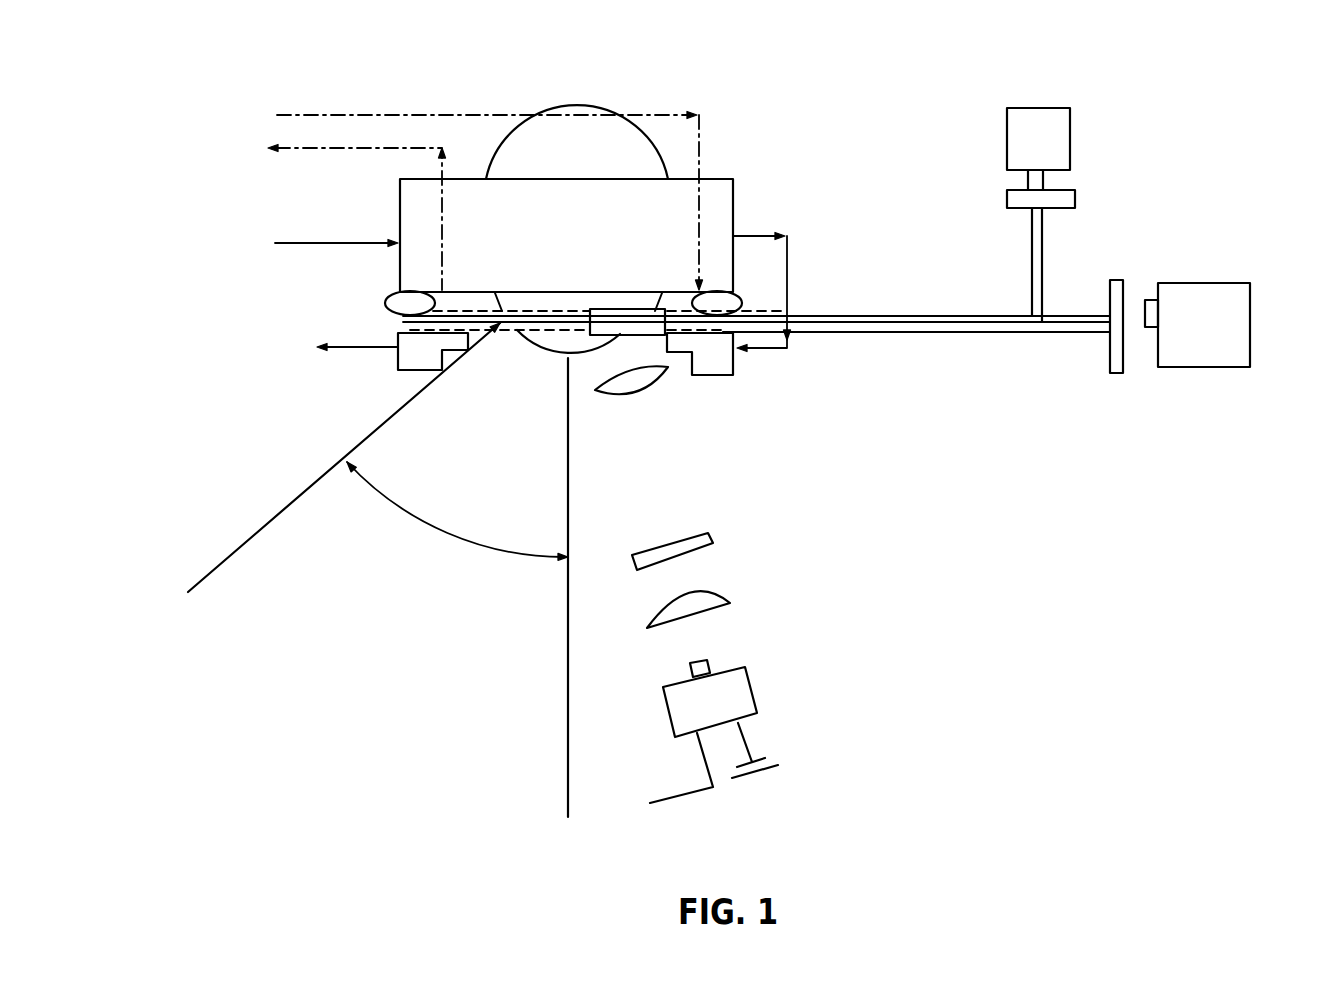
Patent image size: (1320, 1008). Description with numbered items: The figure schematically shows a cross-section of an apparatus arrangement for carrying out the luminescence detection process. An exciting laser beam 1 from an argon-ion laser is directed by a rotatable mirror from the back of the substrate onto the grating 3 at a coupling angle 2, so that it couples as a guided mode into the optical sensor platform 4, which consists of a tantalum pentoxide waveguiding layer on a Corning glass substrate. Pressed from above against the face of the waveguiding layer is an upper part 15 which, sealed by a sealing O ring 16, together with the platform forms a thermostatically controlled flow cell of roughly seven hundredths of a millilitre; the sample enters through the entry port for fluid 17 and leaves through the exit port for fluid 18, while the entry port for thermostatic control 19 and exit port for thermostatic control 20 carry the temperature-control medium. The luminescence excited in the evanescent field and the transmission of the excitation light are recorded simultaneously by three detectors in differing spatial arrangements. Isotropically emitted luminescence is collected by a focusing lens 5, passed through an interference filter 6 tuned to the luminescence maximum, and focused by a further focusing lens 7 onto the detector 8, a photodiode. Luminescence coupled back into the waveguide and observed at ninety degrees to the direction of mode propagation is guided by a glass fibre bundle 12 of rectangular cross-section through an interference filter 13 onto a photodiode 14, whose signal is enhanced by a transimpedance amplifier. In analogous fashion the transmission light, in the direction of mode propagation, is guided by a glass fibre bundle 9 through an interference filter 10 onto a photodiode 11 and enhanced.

The exciting laser beam 1 is at (298, 500).
The coupling angle 2 is at (445, 537).
The grating 3 is at (530, 338).
The optical sensor platform 4 is at (401, 318).
The focusing lens 5 is at (640, 384).
The interference filter 6 is at (707, 540).
The focusing lens 7 is at (707, 600).
The detector 8 is at (740, 687).
The glass fibre bundle 9 is at (653, 324).
The interference filter 10 is at (1117, 368).
The photodiode 11 is at (1240, 322).
The glass fibre bundle 12 is at (910, 316).
The interference filter 13 is at (1067, 198).
The photodiode 14 is at (1053, 138).
The upper part 15 is at (718, 194).
The sealing O ring 16 is at (388, 302).
The entry port for fluid 17 is at (278, 112).
The exit port for fluid 18 is at (292, 150).
The entry port for thermostatic control 19 is at (280, 246).
The exit port for thermostatic control 20 is at (325, 352).